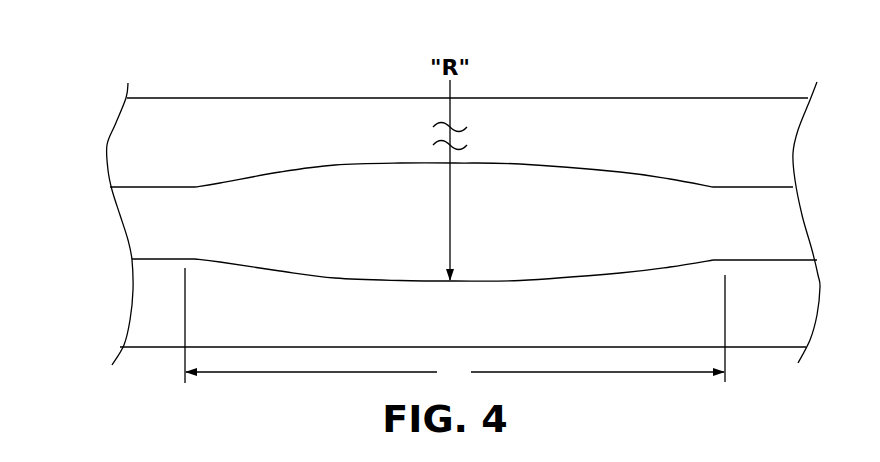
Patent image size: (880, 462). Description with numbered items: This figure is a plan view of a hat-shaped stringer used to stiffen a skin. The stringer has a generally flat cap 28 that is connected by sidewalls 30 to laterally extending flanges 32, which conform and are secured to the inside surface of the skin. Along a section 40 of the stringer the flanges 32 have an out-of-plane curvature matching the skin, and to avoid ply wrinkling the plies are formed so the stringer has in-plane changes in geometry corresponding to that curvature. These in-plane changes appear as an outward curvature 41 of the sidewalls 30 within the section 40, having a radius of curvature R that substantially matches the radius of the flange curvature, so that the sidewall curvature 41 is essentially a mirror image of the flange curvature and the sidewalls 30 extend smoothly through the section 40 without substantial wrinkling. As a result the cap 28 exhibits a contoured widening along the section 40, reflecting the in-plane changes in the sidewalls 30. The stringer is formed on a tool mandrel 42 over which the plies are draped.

The cap 28 is at (193, 223).
The sidewalls 30 is at (335, 164).
The flanges 32 is at (155, 308).
The section 40 is at (455, 326).
The outward curvature 41 is at (324, 281).
The tool mandrel 42 is at (143, 137).